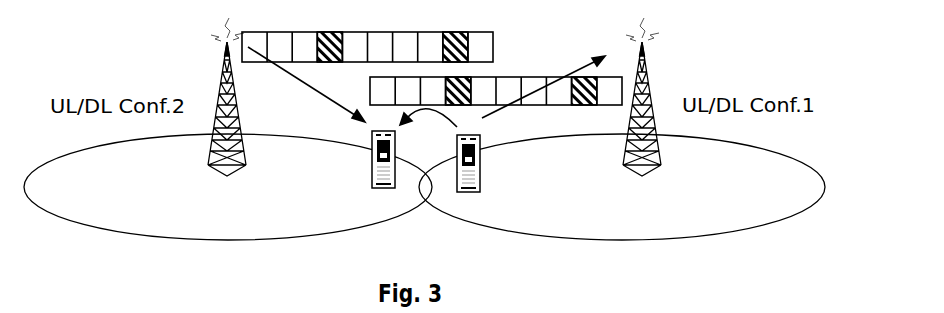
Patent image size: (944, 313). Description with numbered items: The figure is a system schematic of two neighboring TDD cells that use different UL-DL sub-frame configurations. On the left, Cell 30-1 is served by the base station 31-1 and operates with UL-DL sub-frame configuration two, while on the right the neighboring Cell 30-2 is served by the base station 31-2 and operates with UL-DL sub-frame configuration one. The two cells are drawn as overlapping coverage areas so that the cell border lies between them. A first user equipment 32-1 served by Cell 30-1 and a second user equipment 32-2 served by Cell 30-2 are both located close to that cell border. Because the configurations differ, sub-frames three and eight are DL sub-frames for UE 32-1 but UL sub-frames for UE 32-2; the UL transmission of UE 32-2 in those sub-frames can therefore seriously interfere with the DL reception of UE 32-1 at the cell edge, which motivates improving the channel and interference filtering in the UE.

The cell 30-1 is at (228, 187).
The cell 30-2 is at (622, 187).
The base station 31-1 is at (234, 114).
The base station 31-2 is at (645, 115).
The user equipment 32-1 is at (367, 171).
The user equipment 32-2 is at (507, 173).